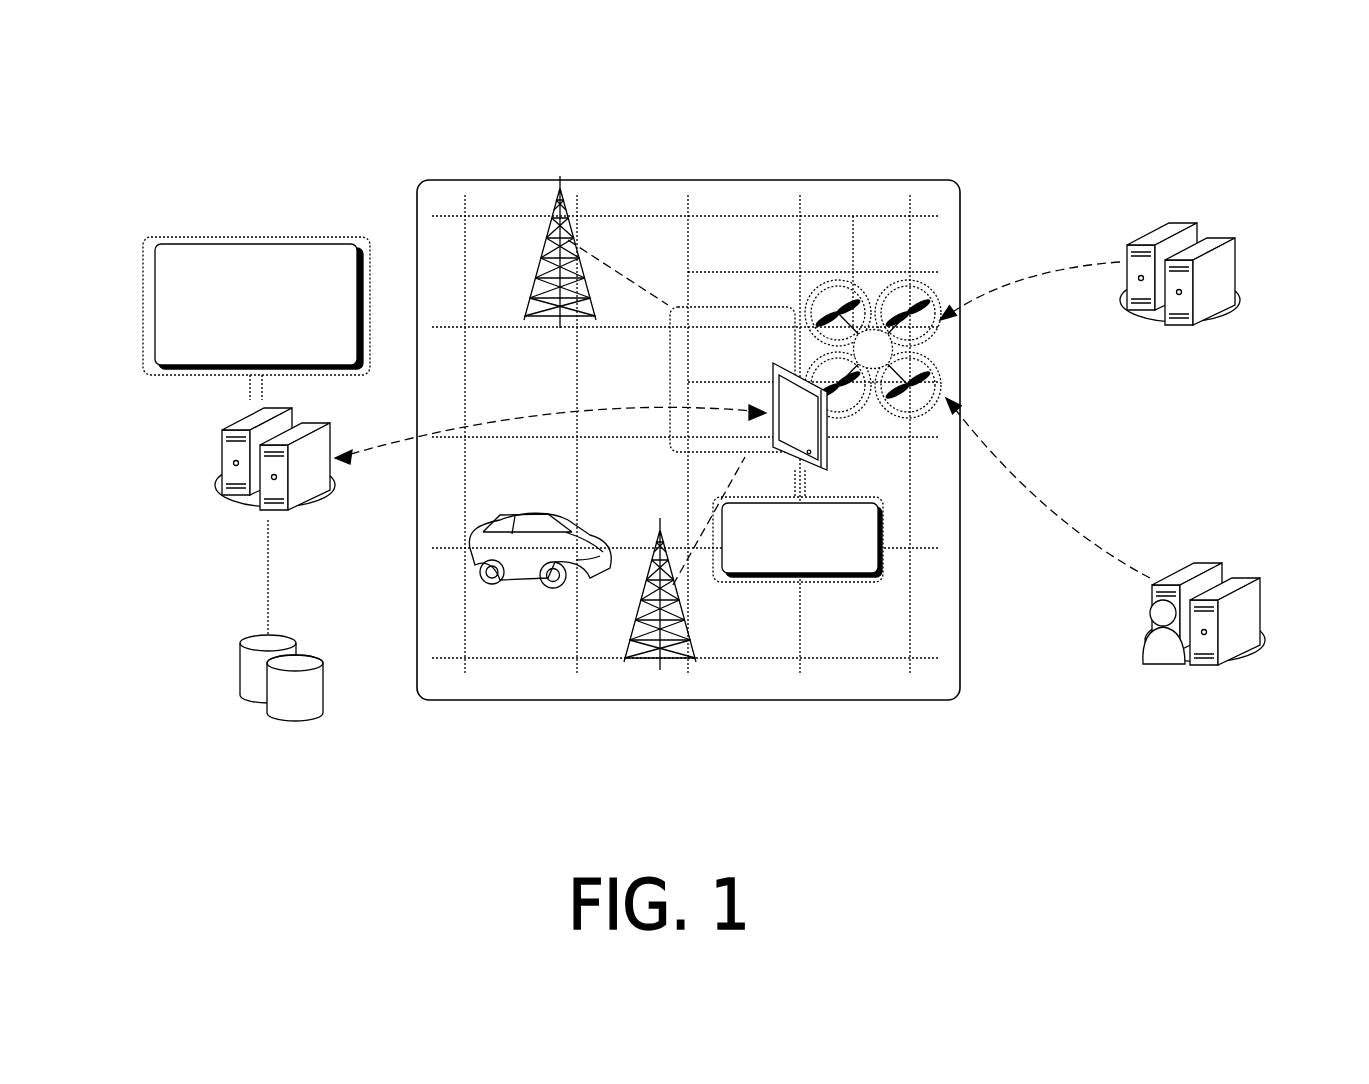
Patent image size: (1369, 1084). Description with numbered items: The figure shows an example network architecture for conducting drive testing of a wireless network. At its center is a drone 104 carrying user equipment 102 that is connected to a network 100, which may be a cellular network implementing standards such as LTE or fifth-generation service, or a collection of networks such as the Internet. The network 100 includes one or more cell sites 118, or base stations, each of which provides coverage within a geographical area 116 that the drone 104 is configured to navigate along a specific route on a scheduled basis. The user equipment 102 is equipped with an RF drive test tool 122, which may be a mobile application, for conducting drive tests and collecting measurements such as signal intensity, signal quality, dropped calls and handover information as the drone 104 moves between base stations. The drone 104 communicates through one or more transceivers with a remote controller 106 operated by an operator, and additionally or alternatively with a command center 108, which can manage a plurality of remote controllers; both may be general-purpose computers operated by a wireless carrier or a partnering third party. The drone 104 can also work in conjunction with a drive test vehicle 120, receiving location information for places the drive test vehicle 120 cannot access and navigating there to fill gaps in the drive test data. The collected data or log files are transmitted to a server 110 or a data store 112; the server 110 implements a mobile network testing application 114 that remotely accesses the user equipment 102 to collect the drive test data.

The network 100 is at (173, 122).
The user equipment 102 is at (790, 365).
The drone 104 is at (912, 283).
The remote controller 106 is at (1215, 222).
The command center 108 is at (1237, 560).
The server 110 is at (222, 455).
The data store 112 is at (258, 637).
The mobile network testing application 114 is at (256, 318).
The geographical area 116 is at (697, 307).
The cell site 118 is at (542, 272).
The drive test vehicle 120 is at (528, 585).
The RF drive test tool 122 is at (798, 526).